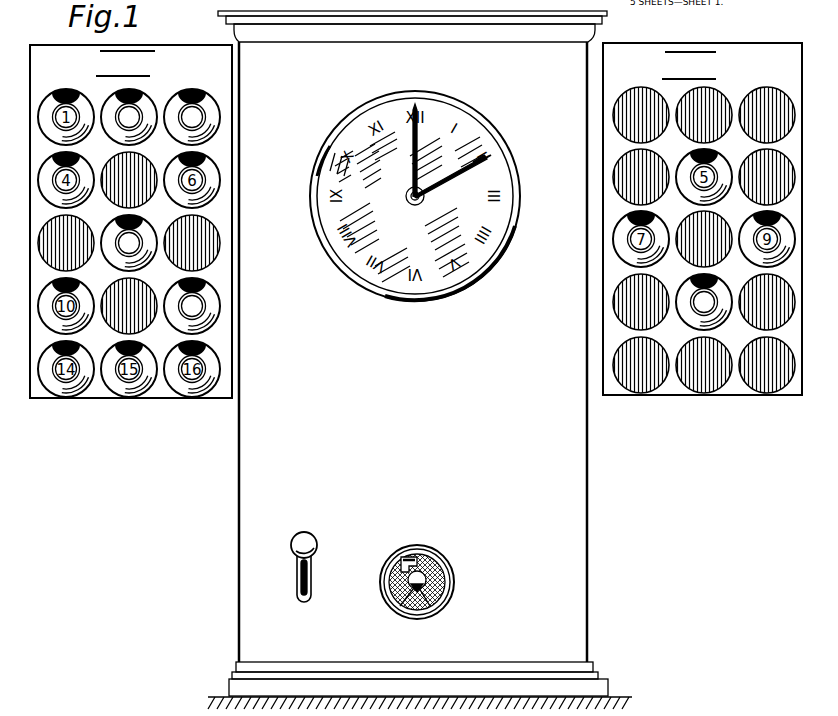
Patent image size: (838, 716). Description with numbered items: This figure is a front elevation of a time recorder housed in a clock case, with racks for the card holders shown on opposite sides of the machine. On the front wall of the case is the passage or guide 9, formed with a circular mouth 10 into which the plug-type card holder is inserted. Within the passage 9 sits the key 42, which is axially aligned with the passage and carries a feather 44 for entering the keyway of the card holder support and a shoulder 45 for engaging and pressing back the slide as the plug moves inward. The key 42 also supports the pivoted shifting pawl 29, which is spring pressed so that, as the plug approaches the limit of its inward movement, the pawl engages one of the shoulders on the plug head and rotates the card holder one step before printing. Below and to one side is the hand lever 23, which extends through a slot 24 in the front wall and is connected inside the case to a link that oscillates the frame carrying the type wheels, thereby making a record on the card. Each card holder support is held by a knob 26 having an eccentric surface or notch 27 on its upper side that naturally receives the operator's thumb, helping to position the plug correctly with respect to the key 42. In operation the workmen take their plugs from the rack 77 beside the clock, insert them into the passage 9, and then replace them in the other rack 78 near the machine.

The passage or guide 9 is at (443, 572).
The circular mouth 10 is at (455, 582).
The hand lever 23 is at (291, 545).
The slot 24 is at (312, 580).
The knob 26 is at (145, 262).
The eccentric surface or notch 27 is at (137, 90).
The shifting pawl 29 is at (420, 556).
The key 42 is at (427, 586).
The feather 44 is at (426, 594).
The shoulder 45 is at (407, 593).
The rack 77 is at (677, 395).
The rack 78 is at (104, 398).